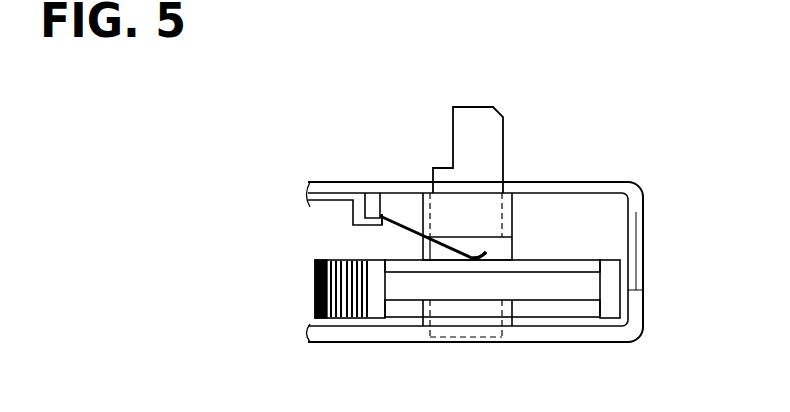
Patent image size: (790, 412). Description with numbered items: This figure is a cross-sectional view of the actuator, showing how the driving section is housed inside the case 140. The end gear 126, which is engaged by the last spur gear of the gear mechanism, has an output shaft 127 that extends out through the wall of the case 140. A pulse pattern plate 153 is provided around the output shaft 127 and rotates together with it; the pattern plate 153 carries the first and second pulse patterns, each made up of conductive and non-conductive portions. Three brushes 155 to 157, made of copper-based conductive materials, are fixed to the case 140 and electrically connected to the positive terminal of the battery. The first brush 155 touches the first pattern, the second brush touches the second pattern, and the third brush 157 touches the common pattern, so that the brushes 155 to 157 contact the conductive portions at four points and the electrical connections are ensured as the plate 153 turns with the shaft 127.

The end gear 126 is at (315, 288).
The output shaft 127 is at (495, 134).
The case 140 is at (645, 232).
The pulse pattern plate 153 is at (553, 266).
The first brush 155 is at (402, 216).
The third brush 157 is at (479, 255).